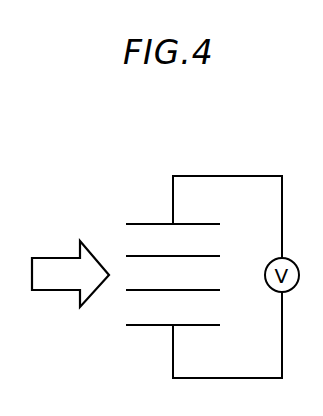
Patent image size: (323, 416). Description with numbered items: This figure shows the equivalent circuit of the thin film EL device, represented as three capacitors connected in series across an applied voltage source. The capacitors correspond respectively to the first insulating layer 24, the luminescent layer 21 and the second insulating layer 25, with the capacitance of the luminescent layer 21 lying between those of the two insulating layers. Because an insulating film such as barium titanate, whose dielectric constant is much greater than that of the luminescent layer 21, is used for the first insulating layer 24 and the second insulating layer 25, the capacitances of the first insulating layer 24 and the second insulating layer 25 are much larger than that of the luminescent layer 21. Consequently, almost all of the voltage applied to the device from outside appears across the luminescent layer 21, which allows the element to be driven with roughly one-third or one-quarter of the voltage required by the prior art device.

The first insulating layer 24 is at (226, 224).
The luminescent layer 21 is at (226, 257).
The second insulating layer 25 is at (226, 291).